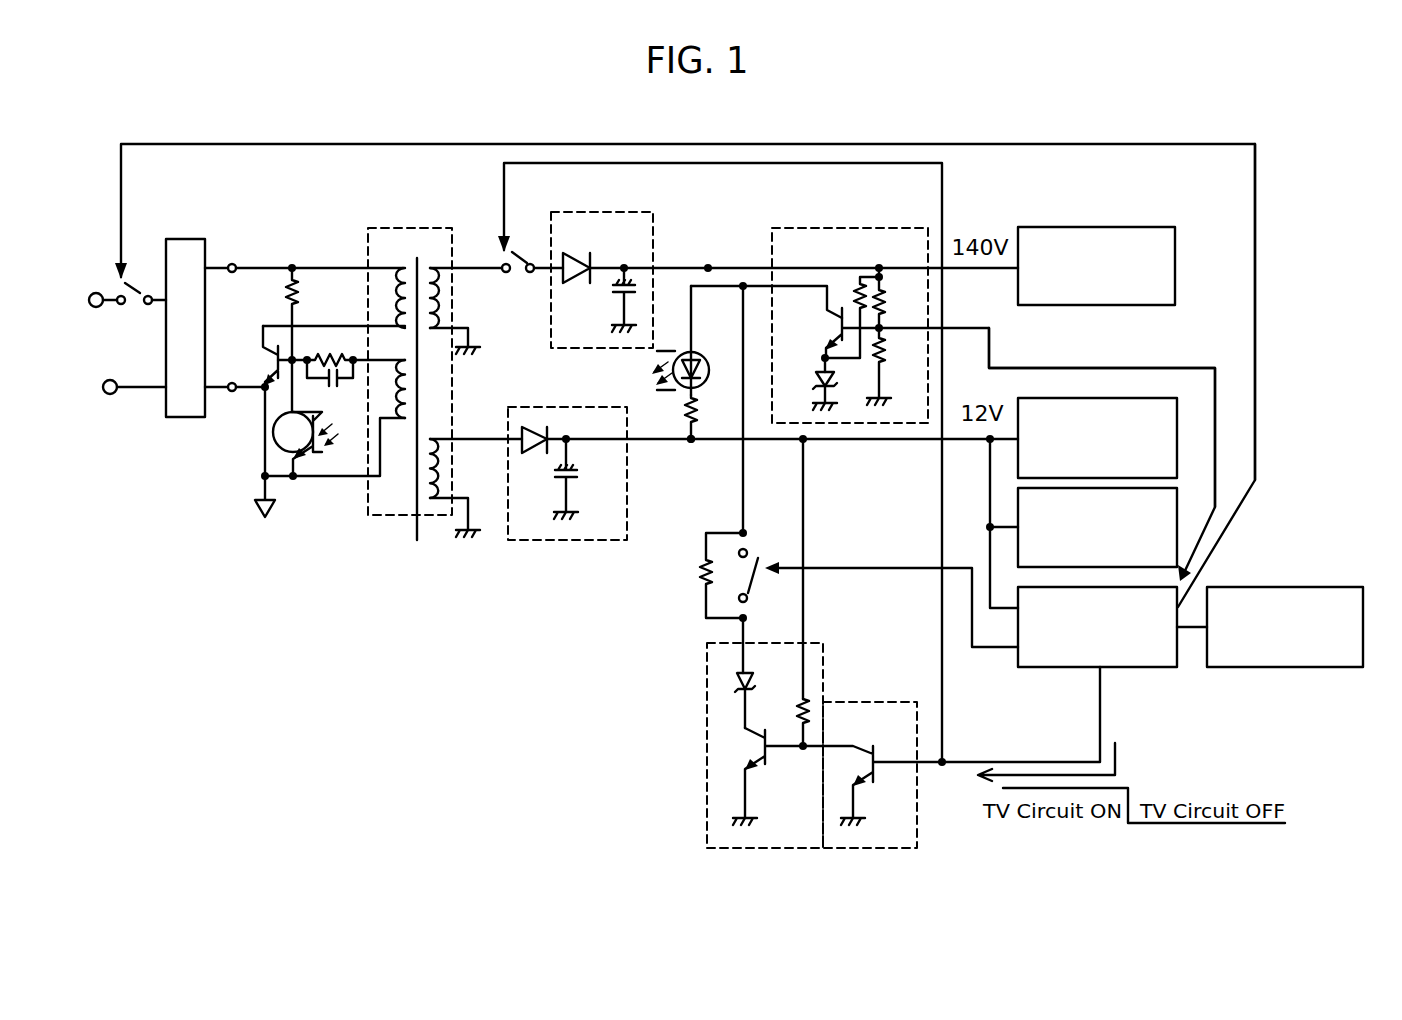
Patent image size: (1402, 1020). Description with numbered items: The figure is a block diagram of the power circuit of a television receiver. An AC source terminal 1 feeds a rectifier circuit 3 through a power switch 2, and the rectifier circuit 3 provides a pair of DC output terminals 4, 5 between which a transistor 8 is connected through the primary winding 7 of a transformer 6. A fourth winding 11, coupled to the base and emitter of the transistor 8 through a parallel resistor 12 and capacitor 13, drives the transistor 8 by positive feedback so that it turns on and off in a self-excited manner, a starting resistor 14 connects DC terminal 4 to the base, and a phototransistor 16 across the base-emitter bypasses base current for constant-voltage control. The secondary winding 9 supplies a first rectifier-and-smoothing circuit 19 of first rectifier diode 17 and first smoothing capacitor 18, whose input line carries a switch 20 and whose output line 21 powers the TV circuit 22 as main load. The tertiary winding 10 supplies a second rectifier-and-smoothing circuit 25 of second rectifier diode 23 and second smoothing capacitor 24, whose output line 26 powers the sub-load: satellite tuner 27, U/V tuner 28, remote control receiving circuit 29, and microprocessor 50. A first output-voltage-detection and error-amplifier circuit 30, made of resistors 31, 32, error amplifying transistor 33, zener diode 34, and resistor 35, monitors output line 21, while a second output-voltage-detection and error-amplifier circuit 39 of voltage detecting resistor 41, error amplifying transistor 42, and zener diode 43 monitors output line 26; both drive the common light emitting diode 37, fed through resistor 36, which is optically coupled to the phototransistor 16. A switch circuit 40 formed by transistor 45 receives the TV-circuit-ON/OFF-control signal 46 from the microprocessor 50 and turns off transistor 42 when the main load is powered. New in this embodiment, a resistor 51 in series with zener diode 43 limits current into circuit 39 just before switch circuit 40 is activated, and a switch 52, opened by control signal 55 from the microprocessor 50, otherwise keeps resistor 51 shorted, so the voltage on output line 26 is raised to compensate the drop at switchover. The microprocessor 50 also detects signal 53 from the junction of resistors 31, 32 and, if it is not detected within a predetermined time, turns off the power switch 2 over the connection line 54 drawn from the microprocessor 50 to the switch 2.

The AC source terminal 1 is at (92, 291).
The power switch 2 is at (137, 283).
The rectifier circuit 3 is at (187, 239).
The DC output terminal 4 is at (233, 263).
The DC output terminal 5 is at (230, 393).
The transformer 6 is at (400, 228).
The primary winding 7 is at (380, 283).
The transistor 8 is at (264, 361).
The secondary winding 9 is at (447, 298).
The tertiary winding 10 is at (450, 475).
The fourth winding 11 is at (398, 420).
The resistor 12 is at (323, 359).
The capacitor 13 is at (333, 388).
The starting resistor 14 is at (303, 295).
The phototransistor 16 is at (307, 456).
The first rectifier diode 17 is at (570, 281).
The first smoothing capacitor 18 is at (637, 286).
The first rectifier-and-smoothing circuit 19 is at (605, 212).
The switch 20 is at (524, 252).
The output line 21 is at (710, 258).
The TV circuit 22 is at (1100, 226).
The second rectifier diode 23 is at (526, 451).
The second smoothing capacitor 24 is at (578, 476).
The second rectifier-and-smoothing circuit 25 is at (557, 406).
The second output line 26 is at (688, 447).
The satellite tuner 27 is at (1178, 434).
The U/V tuner 28 is at (1178, 521).
The remote control receiving circuit 29 is at (1315, 586).
The first output-voltage-detection and error-amplifier circuit 30 is at (826, 228).
The resistor 31 is at (887, 308).
The resistor 32 is at (890, 363).
The error amplifying transistor 33 is at (833, 320).
The zener diode 34 is at (817, 385).
The resistor 35 is at (852, 300).
The resistor 36 is at (700, 407).
The light emitting diode 37 is at (706, 360).
The second output-voltage-detection and error-amplifier circuit 39 is at (823, 654).
The switch circuit 40 is at (867, 702).
The voltage detecting resistor 41 is at (800, 702).
The error amplifying transistor 42 is at (756, 769).
The zener diode 43 is at (740, 681).
The transistor 45 is at (863, 742).
The TV-circuit-ON/OFF-control signal 46 is at (995, 758).
The microprocessor 50 is at (1140, 668).
The resistor 51 is at (695, 583).
The switch 52 is at (759, 588).
The signal 53 is at (1100, 368).
The signal line 54 is at (1256, 279).
The control signal 55 is at (848, 565).